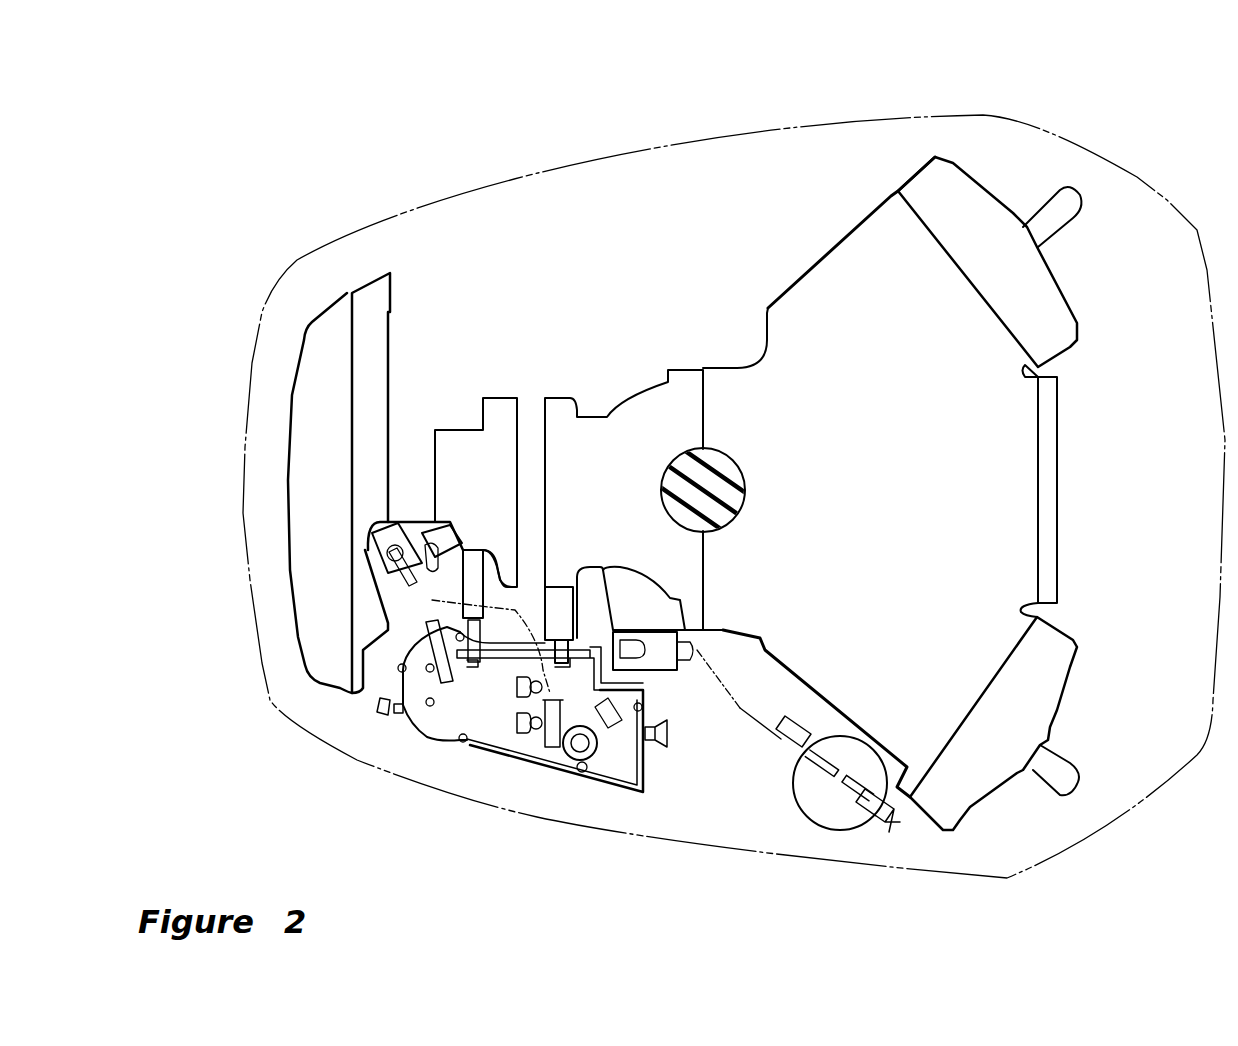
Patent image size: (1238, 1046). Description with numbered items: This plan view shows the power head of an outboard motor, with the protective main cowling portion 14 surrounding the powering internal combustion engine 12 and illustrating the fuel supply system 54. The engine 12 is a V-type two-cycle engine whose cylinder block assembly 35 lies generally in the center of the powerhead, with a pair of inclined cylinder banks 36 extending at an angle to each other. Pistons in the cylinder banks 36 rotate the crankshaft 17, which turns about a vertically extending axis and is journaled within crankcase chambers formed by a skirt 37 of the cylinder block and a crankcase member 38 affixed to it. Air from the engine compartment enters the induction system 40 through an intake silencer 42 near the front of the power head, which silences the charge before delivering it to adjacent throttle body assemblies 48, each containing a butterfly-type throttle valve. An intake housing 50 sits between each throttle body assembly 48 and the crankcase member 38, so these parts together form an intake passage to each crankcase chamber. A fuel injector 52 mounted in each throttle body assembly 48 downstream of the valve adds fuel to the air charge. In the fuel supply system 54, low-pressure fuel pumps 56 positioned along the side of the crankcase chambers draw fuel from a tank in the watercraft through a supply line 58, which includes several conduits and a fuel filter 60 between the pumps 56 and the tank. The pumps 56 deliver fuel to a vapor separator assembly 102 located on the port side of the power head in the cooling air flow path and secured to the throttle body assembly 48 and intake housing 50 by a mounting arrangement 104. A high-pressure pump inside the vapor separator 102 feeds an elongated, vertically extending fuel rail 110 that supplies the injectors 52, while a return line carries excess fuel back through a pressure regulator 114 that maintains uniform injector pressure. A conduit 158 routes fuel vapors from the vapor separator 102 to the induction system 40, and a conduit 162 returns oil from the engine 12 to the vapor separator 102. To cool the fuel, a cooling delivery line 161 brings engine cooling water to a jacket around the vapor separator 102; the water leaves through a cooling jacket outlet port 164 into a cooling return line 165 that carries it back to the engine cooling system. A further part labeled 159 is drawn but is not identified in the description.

The internal combustion engine 12 is at (773, 232).
The main cowling portion 14 is at (1082, 148).
The crankshaft 17 is at (728, 452).
The cylinder block assembly 35 is at (1017, 463).
The cylinder banks 36 is at (983, 313).
The skirt 37 is at (730, 360).
The crankcase member 38 is at (635, 415).
The induction system 40 is at (477, 300).
The intake silencer 42 is at (291, 392).
The throttle body assembly 48 is at (437, 425).
The intake housing 50 is at (553, 395).
The fuel injector 52 is at (432, 530).
The fuel supply system 54 is at (305, 720).
The low-pressure fuel pumps 56 is at (667, 672).
The supply line 58 is at (783, 750).
The fuel filter 60 is at (837, 835).
The vapor separator assembly 102 is at (553, 767).
The mounting arrangement 104 is at (458, 583).
The fuel rail 110 is at (373, 558).
The pressure regulator 114 is at (600, 747).
The conduit 158 is at (522, 735).
The fastener 159 is at (518, 668).
The cooling delivery line 161 is at (383, 717).
The oil return conduit 162 is at (397, 717).
The cooling jacket outlet port 164 is at (650, 740).
The cooling return line 165 is at (663, 740).